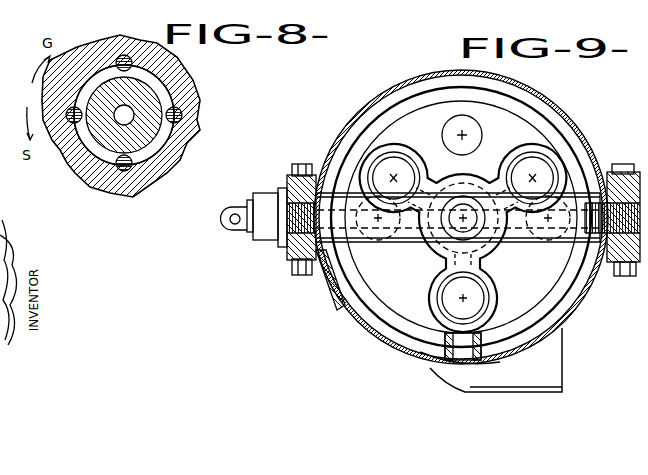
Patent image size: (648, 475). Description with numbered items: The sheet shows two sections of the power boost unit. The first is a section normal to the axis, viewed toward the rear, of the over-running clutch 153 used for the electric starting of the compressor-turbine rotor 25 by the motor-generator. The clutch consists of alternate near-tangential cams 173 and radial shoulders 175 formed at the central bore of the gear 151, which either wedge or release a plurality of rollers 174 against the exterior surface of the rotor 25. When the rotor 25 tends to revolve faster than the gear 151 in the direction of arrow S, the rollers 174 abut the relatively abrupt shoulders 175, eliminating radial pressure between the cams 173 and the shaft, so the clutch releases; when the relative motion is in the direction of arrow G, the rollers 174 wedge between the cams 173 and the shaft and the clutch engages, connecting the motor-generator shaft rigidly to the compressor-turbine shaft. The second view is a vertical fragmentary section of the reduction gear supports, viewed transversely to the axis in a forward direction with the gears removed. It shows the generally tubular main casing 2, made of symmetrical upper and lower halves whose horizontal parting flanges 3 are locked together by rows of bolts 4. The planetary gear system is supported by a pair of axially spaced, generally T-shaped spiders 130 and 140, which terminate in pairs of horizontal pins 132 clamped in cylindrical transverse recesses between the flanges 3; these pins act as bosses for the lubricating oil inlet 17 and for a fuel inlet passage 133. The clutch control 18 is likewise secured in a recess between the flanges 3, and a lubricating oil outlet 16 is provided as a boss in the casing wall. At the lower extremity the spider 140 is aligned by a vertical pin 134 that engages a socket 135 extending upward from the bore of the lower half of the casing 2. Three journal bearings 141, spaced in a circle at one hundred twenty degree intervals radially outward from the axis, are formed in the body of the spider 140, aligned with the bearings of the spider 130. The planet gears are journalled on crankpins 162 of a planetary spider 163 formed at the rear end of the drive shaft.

In FIG. 9, the main casing 2 is at (552, 92).
In FIG. 9, the parting flanges 3 is at (290, 183).
In FIG. 9, the bolts 4 is at (300, 165).
In FIG. 9, the lubricating oil outlet 16 is at (562, 358).
In FIG. 9, the lubricating oil inlet 17 is at (272, 222).
In FIG. 9, the clutch control 18 is at (262, 238).
In FIG. 8, the compressor-turbine rotor 25 is at (162, 125).
In FIG. 9, the spider 130 is at (470, 185).
In FIG. 9, the horizontal pins 132 is at (308, 172).
In FIG. 9, the fuel inlet passage 133 is at (597, 175).
In FIG. 9, the vertical pin 134 is at (472, 352).
In FIG. 9, the socket 135 is at (445, 363).
In FIG. 9, the spider 140 is at (428, 170).
In FIG. 9, the journal bearings 141 is at (392, 155).
In FIG. 8, the gear 151 is at (188, 80).
In FIG. 8, the over-running clutch 153 is at (145, 190).
In FIG. 9, the crankpins 162 is at (482, 120).
In FIG. 9, the planetary spider 163 is at (548, 295).
In FIG. 8, the cams 173 is at (70, 158).
In FIG. 8, the rollers 174 is at (114, 170).
In FIG. 8, the shoulders 175 is at (66, 150).